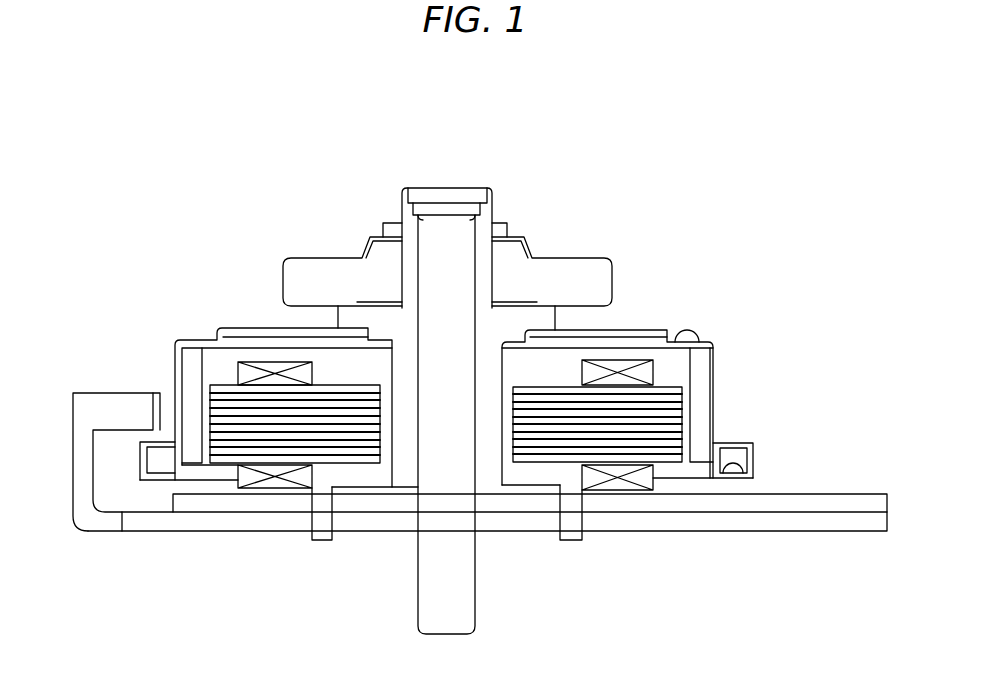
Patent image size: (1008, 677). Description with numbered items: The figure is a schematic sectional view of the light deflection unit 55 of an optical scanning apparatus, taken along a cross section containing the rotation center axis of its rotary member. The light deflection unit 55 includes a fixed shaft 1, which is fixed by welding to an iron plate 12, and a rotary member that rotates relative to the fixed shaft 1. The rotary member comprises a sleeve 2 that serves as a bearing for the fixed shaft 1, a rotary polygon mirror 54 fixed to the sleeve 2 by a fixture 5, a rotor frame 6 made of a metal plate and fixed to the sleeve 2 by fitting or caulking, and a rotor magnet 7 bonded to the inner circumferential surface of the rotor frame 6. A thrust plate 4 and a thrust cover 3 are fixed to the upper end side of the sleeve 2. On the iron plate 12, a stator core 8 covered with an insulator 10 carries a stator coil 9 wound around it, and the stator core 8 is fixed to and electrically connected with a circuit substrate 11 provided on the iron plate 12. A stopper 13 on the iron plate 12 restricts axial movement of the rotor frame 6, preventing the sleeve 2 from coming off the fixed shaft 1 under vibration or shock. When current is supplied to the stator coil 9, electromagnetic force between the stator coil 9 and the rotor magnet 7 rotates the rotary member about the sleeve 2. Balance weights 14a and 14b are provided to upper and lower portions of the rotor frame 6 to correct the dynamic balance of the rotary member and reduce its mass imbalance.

The light deflection unit 55 is at (543, 126).
The fixed shaft 1 is at (437, 596).
The sleeve 2 is at (482, 213).
The thrust cover 3 is at (455, 193).
The thrust plate 4 is at (430, 208).
The fixture 5 is at (368, 238).
The rotary polygon mirror 54 is at (555, 269).
The rotor frame 6 is at (718, 342).
The rotor magnet 7 is at (701, 383).
The stator core 8 is at (640, 405).
The stator coil 9 is at (615, 372).
The insulator 10 is at (571, 530).
The circuit substrate 11 is at (827, 505).
The iron plate 12 is at (805, 525).
The stopper 13 is at (115, 414).
The balance weight 14a is at (690, 331).
The balance weight 14b is at (732, 466).